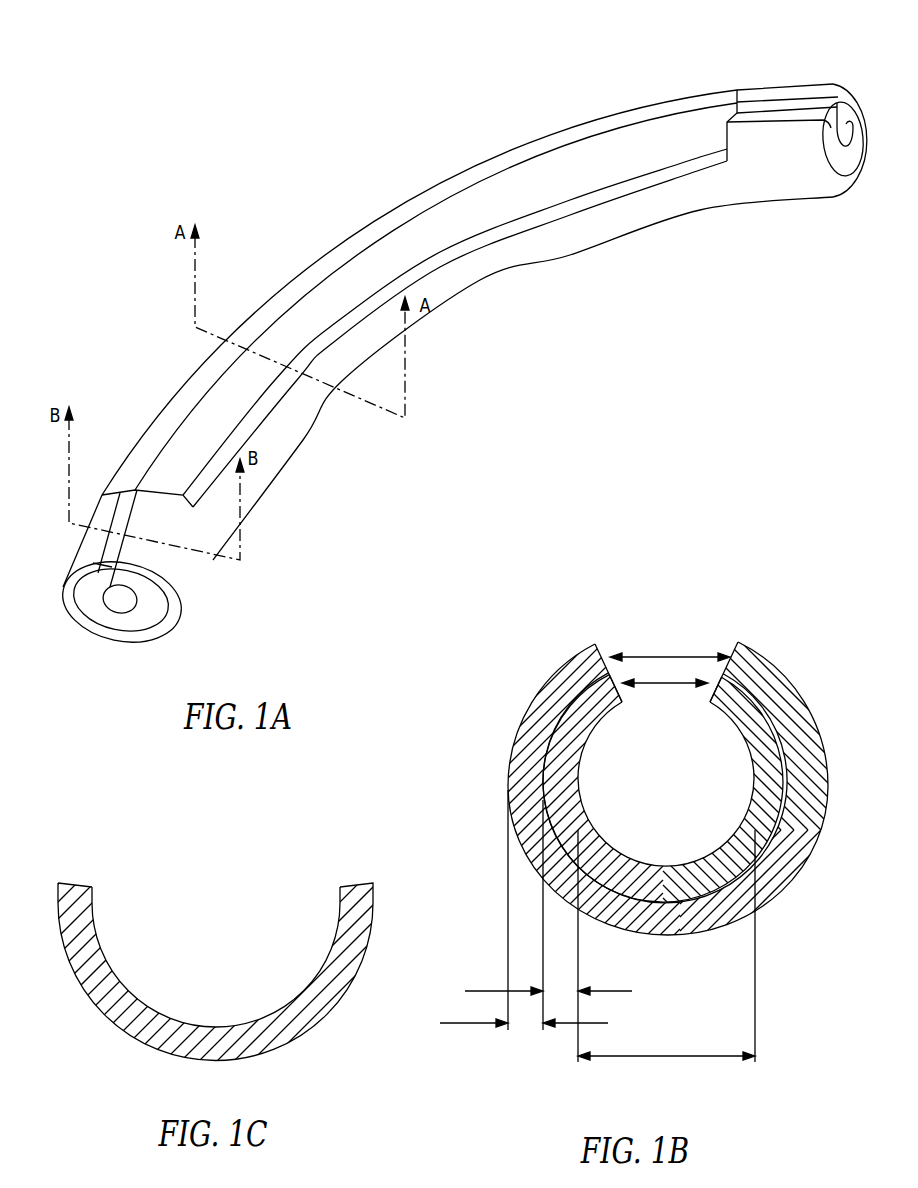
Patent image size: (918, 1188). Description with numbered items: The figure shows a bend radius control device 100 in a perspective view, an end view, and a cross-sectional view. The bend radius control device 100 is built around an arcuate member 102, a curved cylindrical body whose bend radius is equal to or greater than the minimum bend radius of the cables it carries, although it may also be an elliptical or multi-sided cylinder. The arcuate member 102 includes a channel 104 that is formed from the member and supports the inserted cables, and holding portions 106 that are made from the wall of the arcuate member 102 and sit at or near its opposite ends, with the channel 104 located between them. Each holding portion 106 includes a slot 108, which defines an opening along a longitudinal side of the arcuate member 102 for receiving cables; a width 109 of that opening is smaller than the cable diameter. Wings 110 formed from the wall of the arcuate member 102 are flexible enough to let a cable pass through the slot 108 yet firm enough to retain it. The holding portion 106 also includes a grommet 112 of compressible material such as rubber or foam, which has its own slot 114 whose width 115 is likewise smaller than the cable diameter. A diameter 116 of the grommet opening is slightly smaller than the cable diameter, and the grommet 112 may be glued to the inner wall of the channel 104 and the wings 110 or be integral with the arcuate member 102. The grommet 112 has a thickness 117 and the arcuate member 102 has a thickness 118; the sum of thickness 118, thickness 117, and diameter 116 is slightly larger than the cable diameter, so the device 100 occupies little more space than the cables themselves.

In FIG. 1A, the bend radius control device 100 is at (266, 168).
In FIG. 1A, the arcuate member 102 is at (693, 63).
In FIG. 1C, the arcuate member 102 is at (233, 939).
In FIG. 1A, the channel 104 is at (377, 263).
In FIG. 1B, the channel 104 is at (665, 782).
In FIG. 1C, the channel 104 is at (216, 957).
In FIG. 1A, the holding portion 106 is at (848, 75).
In FIG. 1B, the slot 108 is at (677, 642).
In FIG. 1B, the width 109 is at (641, 655).
In FIG. 1A, the wings 110 is at (124, 487).
In FIG. 1A, the grommet 112 is at (84, 668).
In FIG. 1B, the slot 114 is at (694, 670).
In FIG. 1B, the width 115 is at (667, 707).
In FIG. 1B, the diameter 116 is at (665, 1052).
In FIG. 1B, the thickness 117 is at (616, 986).
In FIG. 1B, the thickness 118 is at (455, 1048).